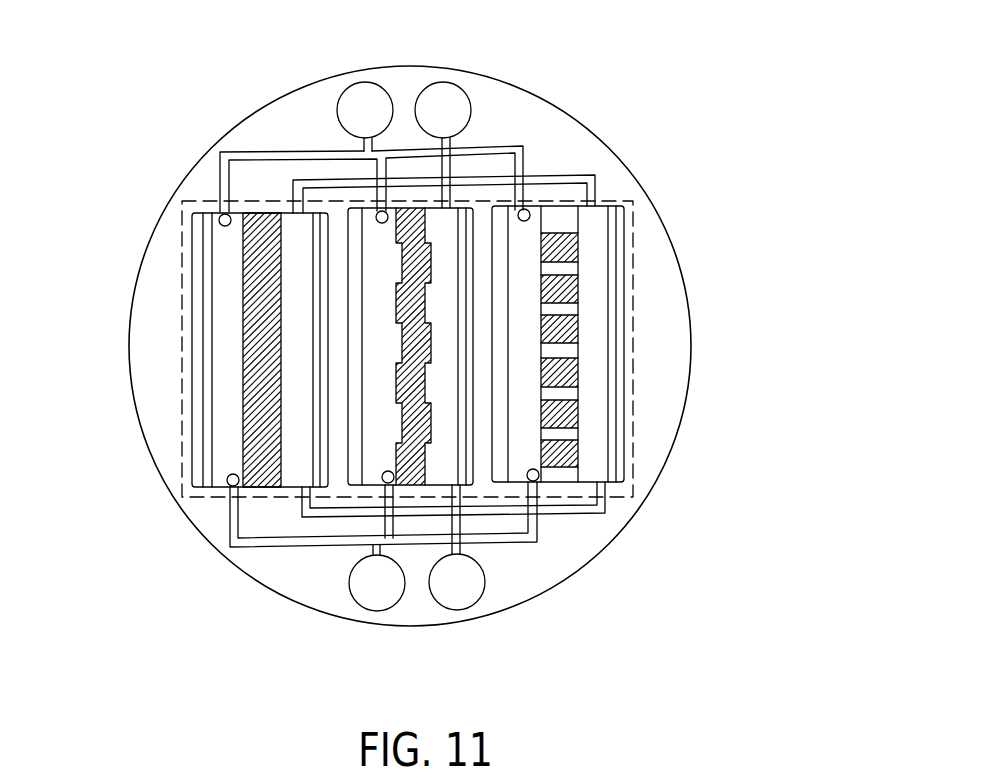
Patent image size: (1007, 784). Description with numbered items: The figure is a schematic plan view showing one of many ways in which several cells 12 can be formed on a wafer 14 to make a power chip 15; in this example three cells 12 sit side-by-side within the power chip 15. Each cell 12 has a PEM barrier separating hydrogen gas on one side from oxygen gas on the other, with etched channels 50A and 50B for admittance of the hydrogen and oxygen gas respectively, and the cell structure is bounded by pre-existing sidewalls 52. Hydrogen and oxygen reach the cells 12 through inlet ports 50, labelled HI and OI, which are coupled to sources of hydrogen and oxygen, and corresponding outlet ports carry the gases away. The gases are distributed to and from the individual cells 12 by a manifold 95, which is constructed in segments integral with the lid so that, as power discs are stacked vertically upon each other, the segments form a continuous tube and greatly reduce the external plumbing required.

The cell 12 is at (551, 407).
The wafer 14 is at (158, 213).
The power chip 15 is at (613, 183).
The inlet port 50 is at (358, 82).
The etched channel 50A is at (213, 307).
The etched channel 50B is at (623, 342).
The sidewalls 52 is at (617, 233).
The manifold 95 is at (255, 150).